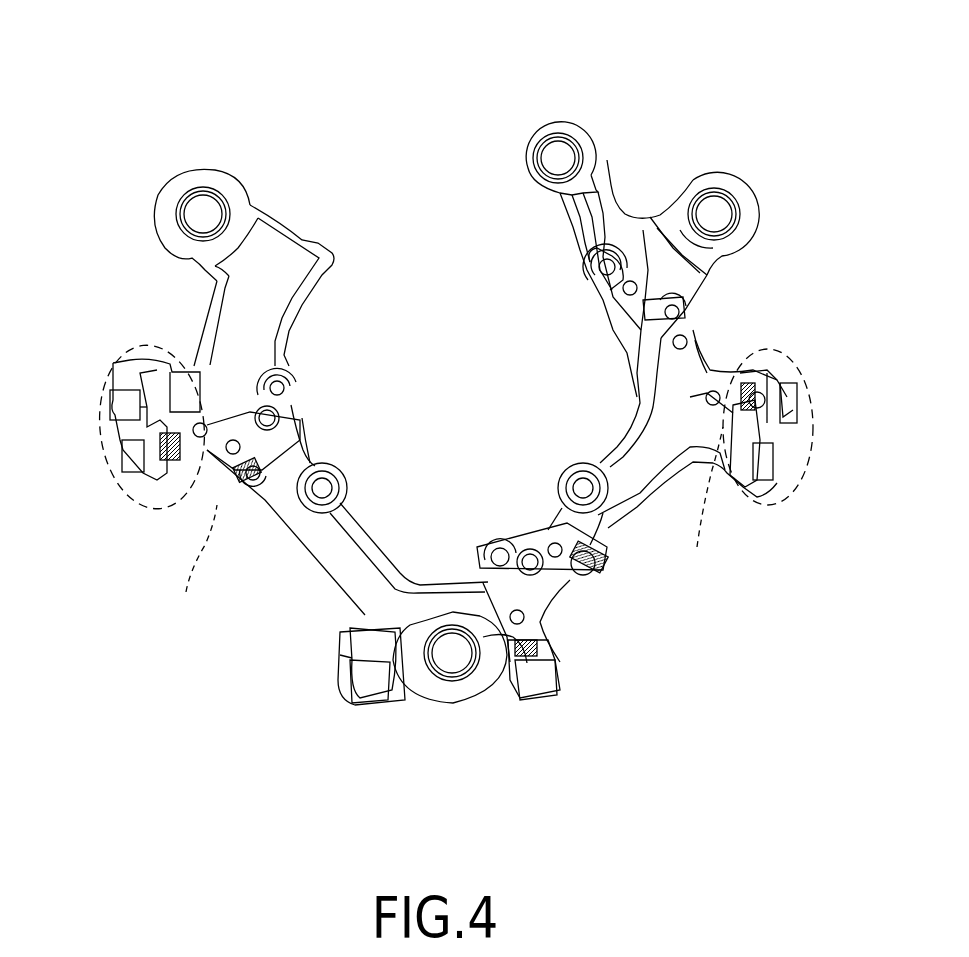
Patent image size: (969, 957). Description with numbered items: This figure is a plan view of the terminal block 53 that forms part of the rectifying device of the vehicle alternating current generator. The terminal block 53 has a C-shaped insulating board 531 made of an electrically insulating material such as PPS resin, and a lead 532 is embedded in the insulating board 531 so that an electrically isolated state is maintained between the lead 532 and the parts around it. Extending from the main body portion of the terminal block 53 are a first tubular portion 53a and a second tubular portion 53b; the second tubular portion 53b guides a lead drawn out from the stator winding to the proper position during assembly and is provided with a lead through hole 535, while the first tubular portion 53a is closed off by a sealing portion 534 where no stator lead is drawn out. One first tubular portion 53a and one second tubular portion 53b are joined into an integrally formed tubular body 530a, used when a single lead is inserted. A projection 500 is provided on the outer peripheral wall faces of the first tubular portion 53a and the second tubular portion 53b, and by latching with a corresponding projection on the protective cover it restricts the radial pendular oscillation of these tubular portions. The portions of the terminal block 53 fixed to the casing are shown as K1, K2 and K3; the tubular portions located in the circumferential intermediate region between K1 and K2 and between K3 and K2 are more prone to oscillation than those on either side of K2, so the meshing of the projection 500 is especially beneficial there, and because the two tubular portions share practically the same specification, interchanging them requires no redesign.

The terminal block 53 is at (607, 160).
The insulating board 531 is at (293, 253).
The lead 532 is at (573, 247).
The sealing portion 534 is at (137, 385).
The lead through hole 535 is at (187, 457).
The projection 500 is at (107, 383).
The first tubular portion 53a is at (120, 352).
The second tubular portion 53b is at (147, 493).
The tubular body 530a is at (212, 625).
The fixed portion K1 is at (172, 192).
The fixed portion K2 is at (412, 625).
The fixed portion K3 is at (733, 195).